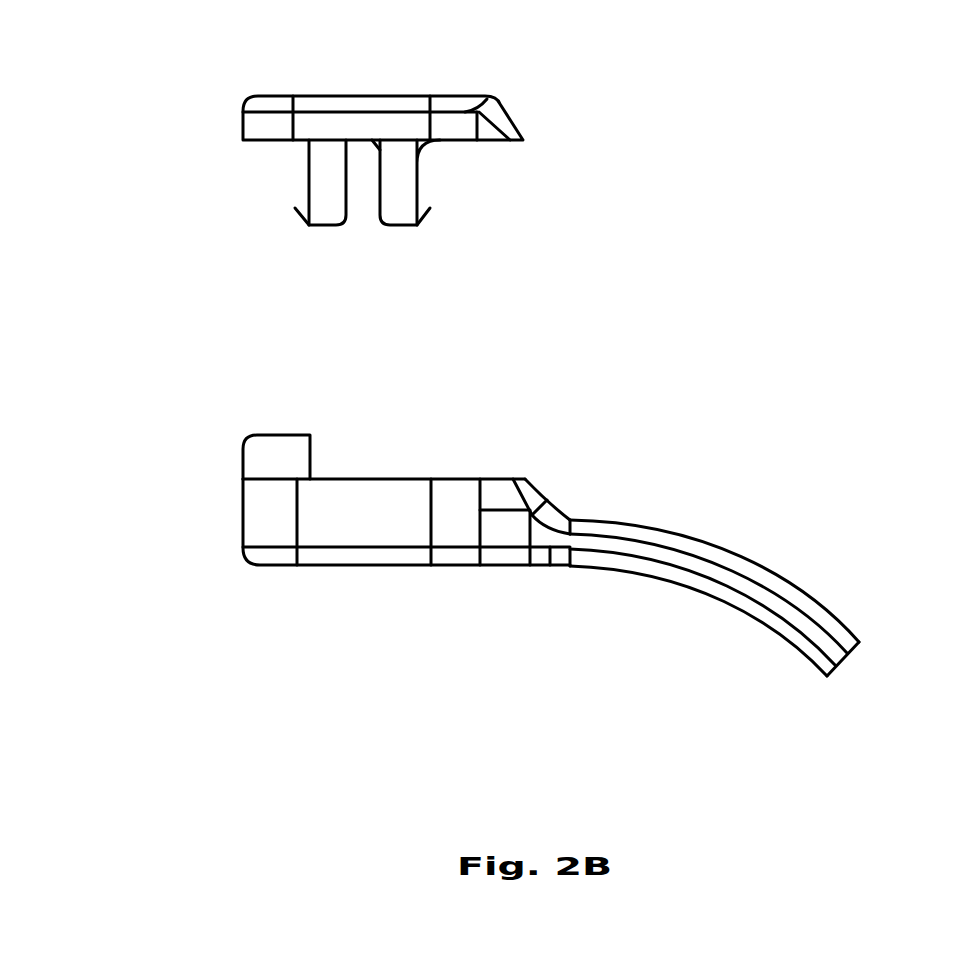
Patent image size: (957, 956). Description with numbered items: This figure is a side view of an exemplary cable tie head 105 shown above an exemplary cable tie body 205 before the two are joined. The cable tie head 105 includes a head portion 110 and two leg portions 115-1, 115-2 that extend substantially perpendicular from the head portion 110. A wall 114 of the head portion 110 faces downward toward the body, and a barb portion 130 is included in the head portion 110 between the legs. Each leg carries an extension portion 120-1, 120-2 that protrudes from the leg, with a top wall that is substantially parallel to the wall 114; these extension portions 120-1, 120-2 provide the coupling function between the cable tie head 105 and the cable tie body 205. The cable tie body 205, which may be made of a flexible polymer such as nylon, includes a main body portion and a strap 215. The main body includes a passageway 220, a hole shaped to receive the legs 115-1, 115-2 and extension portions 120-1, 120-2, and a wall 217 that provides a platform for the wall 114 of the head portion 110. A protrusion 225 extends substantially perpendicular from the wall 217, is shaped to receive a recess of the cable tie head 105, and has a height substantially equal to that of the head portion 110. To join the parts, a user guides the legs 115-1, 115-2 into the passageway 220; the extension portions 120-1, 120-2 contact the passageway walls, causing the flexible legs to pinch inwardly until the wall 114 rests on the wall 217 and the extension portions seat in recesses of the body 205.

The cable tie head 105 is at (147, 62).
The head portion 110 is at (226, 100).
The wall 114 is at (491, 151).
The leg portion 115-1 is at (325, 203).
The leg portion 115-2 is at (398, 203).
The extension portion 120-1 is at (283, 211).
The extension portion 120-2 is at (443, 211).
The barb portion 130 is at (367, 154).
The cable tie body 205 is at (151, 379).
The strap 215 is at (761, 552).
The wall 217 is at (491, 468).
The passageway 220 is at (406, 465).
The protrusion 225 is at (230, 452).